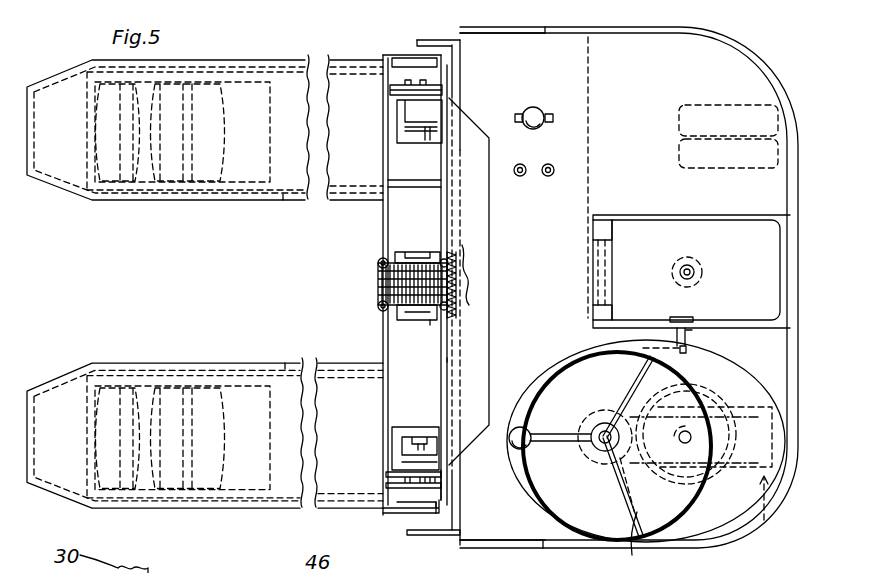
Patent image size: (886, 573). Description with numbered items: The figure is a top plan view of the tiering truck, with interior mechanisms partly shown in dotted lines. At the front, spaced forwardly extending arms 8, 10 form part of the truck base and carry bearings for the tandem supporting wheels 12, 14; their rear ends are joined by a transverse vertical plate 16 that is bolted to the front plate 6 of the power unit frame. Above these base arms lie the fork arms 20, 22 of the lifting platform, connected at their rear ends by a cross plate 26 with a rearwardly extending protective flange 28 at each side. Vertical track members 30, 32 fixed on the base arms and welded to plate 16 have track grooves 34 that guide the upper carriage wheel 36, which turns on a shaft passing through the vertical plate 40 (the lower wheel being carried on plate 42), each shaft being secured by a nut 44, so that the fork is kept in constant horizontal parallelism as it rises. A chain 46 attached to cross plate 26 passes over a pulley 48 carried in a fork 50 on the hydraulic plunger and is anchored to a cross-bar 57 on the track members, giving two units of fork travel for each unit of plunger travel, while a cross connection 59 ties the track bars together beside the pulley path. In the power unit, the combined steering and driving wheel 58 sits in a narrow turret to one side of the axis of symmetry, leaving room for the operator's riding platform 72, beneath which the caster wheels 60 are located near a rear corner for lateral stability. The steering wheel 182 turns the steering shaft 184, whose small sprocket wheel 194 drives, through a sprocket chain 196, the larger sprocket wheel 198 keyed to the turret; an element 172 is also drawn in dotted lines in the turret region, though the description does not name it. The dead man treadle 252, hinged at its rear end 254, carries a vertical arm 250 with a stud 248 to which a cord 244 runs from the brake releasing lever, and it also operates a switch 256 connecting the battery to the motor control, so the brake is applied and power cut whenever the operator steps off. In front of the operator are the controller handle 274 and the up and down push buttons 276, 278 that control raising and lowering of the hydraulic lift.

The front plate 6 is at (417, 40).
The forwardly extending arm 8 is at (283, 200).
The forwardly extending arm 10 is at (285, 363).
The tandem supporting wheel 12 is at (162, 200).
The tandem supporting wheel 14 is at (168, 98).
The transverse vertical plate 16 is at (452, 93).
The fork arm 20 is at (298, 82).
The fork arm 22 is at (246, 392).
The cross plate 26 is at (382, 345).
The protective flange 28 is at (398, 70).
The vertical track member 30 is at (445, 465).
The vertical track member 32 is at (412, 140).
The track groove 34 is at (437, 128).
The upper carriage wheel 36 is at (415, 115).
The vertical plate 40 is at (425, 55).
The vertical plate 42 is at (400, 500).
The nut 44 is at (440, 85).
The chain 46 is at (380, 289).
The pulley 48 is at (390, 262).
The fork 50 is at (430, 325).
The cross-bar 57 is at (447, 358).
The combined steering and driving wheel 58 is at (764, 517).
The cross connection 59 is at (478, 255).
The caster wheels 60 is at (680, 152).
The riding platform 72 is at (727, 66).
The steering shaft 172 is at (712, 400).
The steering wheel 182 is at (685, 510).
The steering shaft 184 is at (603, 450).
The small sprocket wheel 194 is at (607, 497).
The sprocket chain 196 is at (638, 548).
The larger sprocket wheel 198 is at (625, 396).
The cord 244 is at (667, 348).
The stud 248 is at (688, 331).
The vertical arm 250 is at (692, 318).
The dead man treadle 252 is at (691, 271).
The rear end 254 is at (600, 270).
The switch 256 is at (687, 259).
The controller handle 274 is at (532, 112).
The up push button 276 is at (549, 177).
The down push button 278 is at (520, 177).